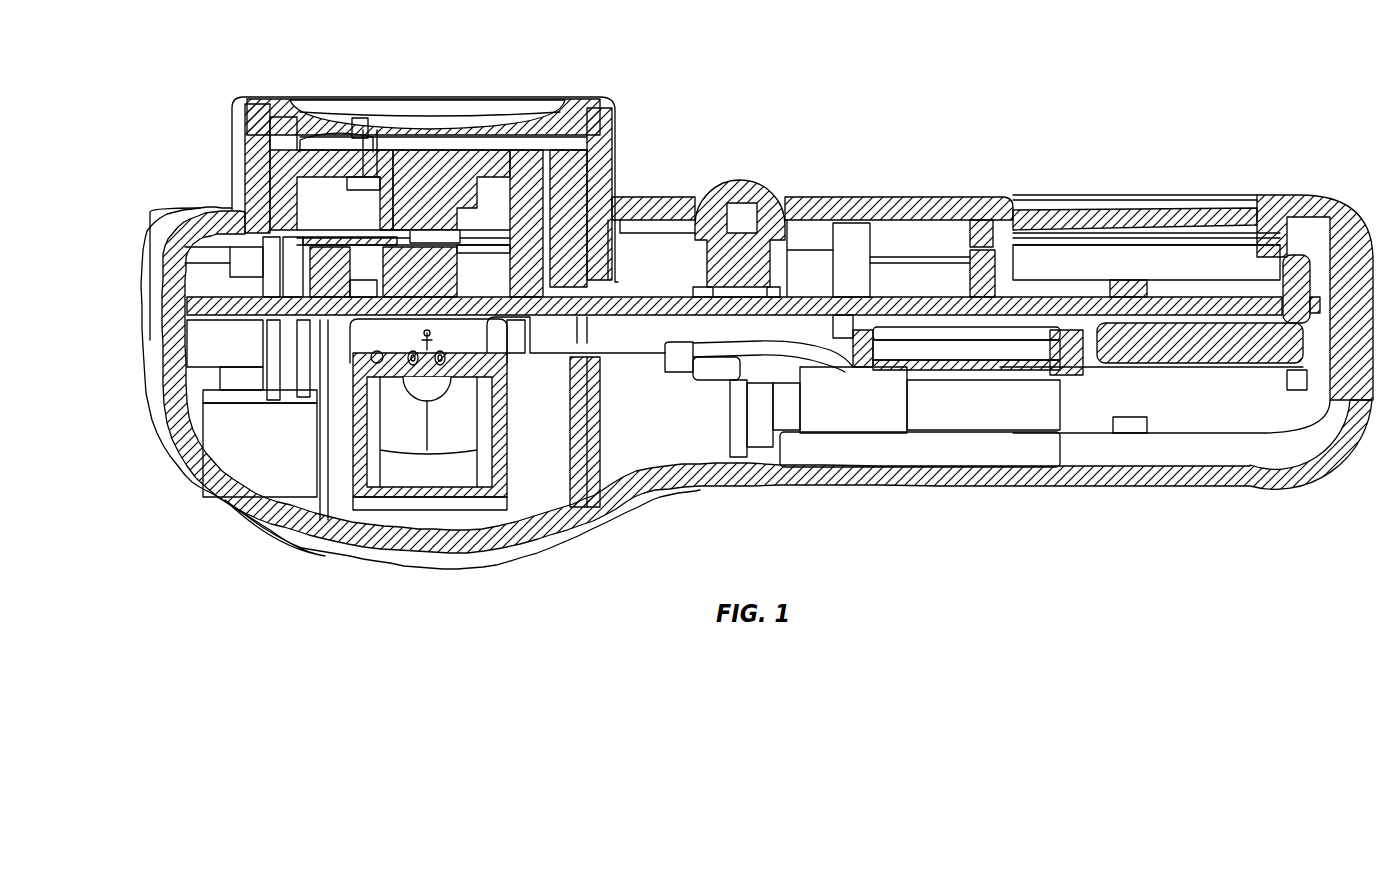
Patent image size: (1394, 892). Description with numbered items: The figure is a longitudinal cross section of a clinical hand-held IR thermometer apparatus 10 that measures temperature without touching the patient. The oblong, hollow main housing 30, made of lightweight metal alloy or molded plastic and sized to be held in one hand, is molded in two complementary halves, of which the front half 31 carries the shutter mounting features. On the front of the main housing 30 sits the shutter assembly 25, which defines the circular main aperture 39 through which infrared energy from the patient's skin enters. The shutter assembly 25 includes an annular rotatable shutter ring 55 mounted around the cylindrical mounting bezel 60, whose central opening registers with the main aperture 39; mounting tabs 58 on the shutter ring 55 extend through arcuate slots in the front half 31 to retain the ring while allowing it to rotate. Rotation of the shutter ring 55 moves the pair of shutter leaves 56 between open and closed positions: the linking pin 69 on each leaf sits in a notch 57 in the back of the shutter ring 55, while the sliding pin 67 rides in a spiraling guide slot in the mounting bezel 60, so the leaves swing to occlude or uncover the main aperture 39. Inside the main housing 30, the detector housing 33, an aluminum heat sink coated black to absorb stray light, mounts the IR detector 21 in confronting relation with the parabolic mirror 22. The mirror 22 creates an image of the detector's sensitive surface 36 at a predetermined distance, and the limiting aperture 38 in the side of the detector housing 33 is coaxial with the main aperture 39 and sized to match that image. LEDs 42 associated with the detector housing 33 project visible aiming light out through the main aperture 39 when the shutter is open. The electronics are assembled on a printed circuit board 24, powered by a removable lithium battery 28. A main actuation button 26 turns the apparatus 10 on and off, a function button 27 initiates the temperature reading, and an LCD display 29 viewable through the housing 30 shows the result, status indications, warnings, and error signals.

The clinical hand-held IR thermometer apparatus 10 is at (172, 64).
The IR detector 21 is at (437, 393).
The parabolic mirror 22 is at (437, 470).
The printed circuit board 24 is at (780, 313).
The shutter assembly 25 is at (572, 73).
The main actuation button 26 is at (238, 512).
The function button 27 is at (735, 182).
The lithium battery 28 is at (1180, 377).
The LCD display 29 is at (1197, 238).
The main housing 30 is at (993, 484).
The front half 31 is at (935, 205).
The detector housing 33 is at (355, 433).
The sensitive surface 36 is at (423, 392).
The limiting aperture 38 is at (427, 308).
The main aperture 39 is at (430, 102).
The LEDs 42 is at (377, 360).
The shutter ring 55 is at (595, 140).
The shutter leaves 56 is at (448, 140).
The notch 57 is at (365, 130).
The mounting tabs 58 is at (253, 262).
The mounting bezel 60 is at (568, 185).
The sliding pin 67 is at (345, 175).
The linking pin 69 is at (345, 135).